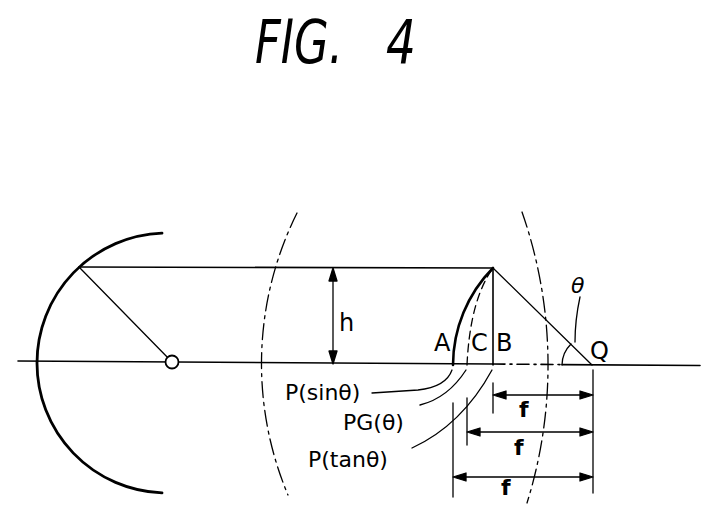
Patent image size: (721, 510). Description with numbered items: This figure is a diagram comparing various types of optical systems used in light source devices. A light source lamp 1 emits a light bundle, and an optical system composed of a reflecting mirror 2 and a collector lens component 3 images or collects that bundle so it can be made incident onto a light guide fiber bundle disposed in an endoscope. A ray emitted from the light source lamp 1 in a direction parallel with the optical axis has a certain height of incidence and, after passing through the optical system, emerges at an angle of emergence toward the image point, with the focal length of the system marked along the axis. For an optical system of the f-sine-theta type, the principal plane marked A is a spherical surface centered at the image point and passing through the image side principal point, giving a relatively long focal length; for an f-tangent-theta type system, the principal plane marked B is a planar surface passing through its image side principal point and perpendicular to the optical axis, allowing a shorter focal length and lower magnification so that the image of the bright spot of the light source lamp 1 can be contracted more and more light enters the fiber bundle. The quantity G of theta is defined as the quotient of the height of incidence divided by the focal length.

The light source lamp 1 is at (178, 357).
The reflecting mirror 2 is at (106, 247).
The collector lens component 3 is at (530, 175).